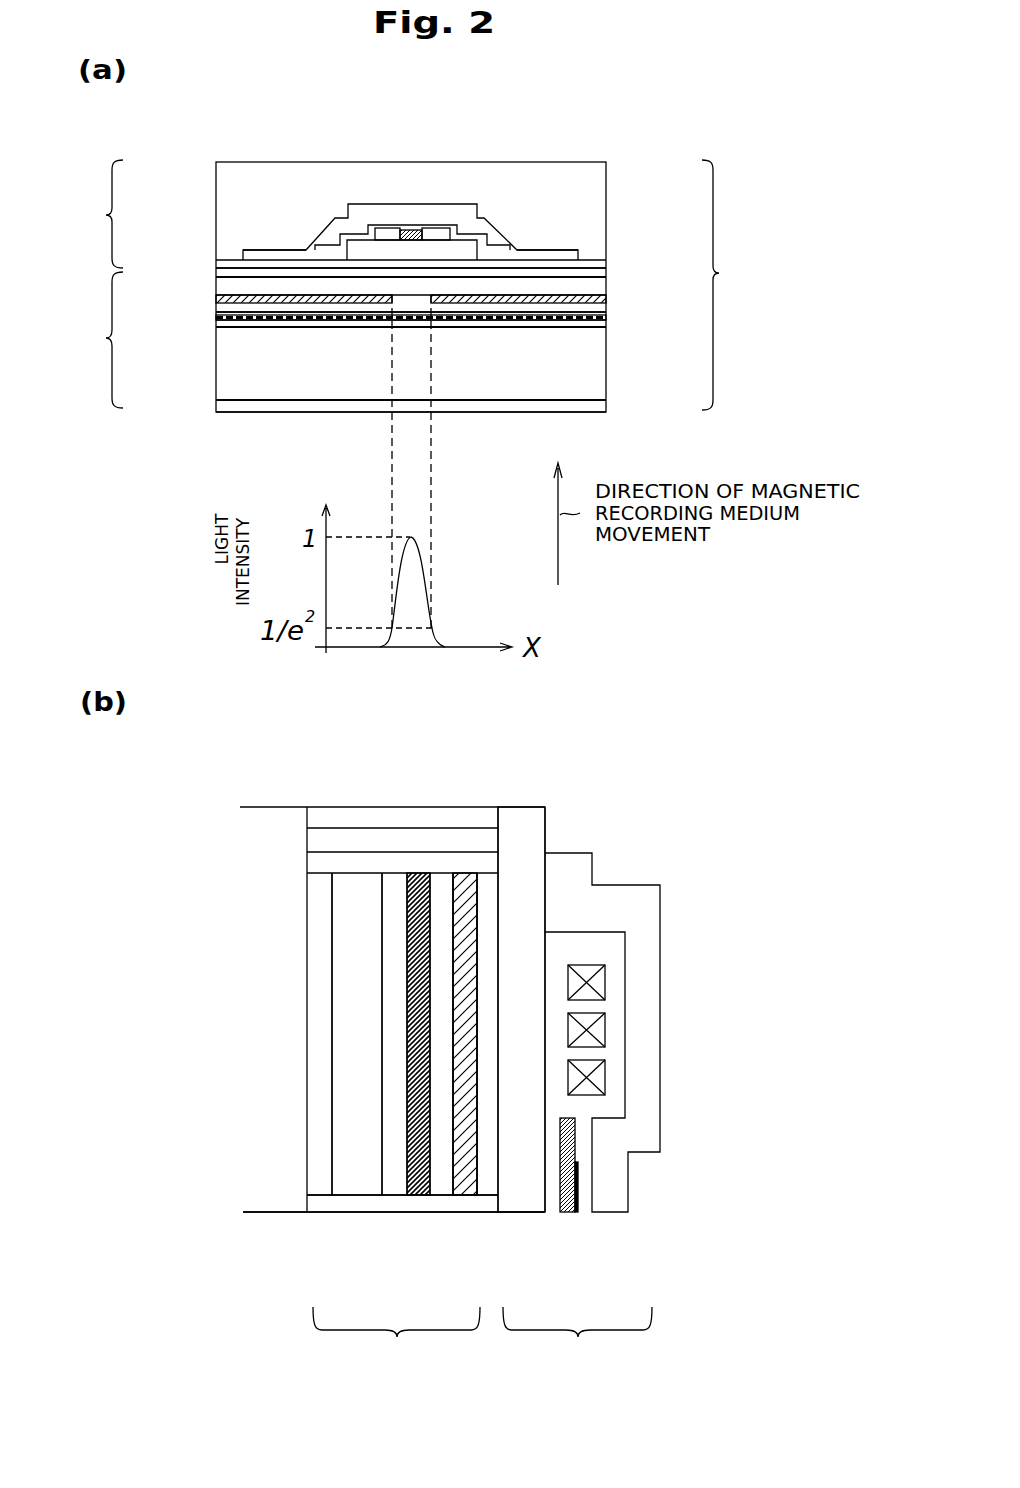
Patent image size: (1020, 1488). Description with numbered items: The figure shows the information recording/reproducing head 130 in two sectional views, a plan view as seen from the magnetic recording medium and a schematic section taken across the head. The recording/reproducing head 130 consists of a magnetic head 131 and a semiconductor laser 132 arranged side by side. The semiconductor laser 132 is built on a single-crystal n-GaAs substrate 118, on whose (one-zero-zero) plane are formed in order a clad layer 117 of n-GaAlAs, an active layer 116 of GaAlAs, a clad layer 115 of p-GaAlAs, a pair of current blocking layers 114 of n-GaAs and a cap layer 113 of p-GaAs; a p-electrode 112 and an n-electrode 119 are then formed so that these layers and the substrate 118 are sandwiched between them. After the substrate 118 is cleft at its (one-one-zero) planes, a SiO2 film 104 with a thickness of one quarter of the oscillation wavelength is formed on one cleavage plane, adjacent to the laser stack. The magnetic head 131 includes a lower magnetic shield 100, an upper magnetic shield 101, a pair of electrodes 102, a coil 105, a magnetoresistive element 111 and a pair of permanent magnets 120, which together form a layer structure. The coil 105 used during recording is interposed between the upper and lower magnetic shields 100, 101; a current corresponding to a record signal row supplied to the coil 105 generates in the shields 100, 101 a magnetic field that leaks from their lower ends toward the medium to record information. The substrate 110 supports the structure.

The lower magnetic shield 100 is at (467, 250).
The upper magnetic shield 101 is at (347, 203).
The electrodes 102 is at (263, 250).
The SiO2 film 104 is at (472, 1203).
The coil 105 is at (605, 987).
The substrate 110 is at (293, 1200).
The magnetoresistive element 111 is at (413, 229).
The p-electrode 112 is at (215, 275).
The cap layer 113 is at (603, 288).
The current blocking layers 114 is at (215, 300).
The clad layer 115 is at (603, 314).
The active layer 116 is at (216, 317).
The clad layer 117 is at (603, 328).
The n-GaAs substrate 118 is at (227, 367).
The n-electrode 119 is at (220, 407).
The permanent magnets 120 is at (387, 229).
The recording/reproducing head 130 is at (652, 784).
The magnetic head 131 is at (327, 764).
The semiconductor laser 132 is at (354, 820).